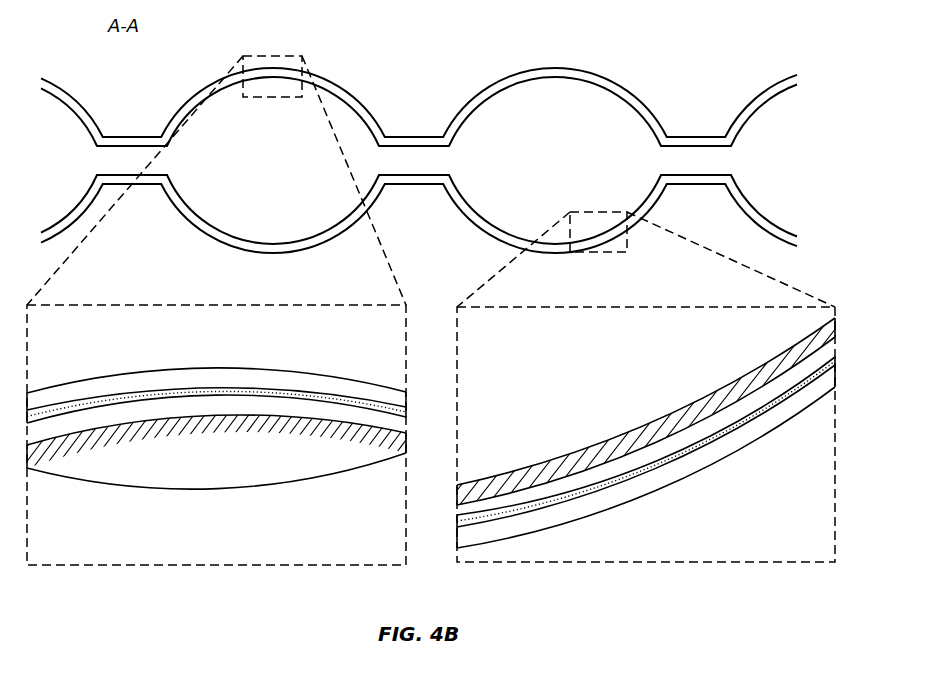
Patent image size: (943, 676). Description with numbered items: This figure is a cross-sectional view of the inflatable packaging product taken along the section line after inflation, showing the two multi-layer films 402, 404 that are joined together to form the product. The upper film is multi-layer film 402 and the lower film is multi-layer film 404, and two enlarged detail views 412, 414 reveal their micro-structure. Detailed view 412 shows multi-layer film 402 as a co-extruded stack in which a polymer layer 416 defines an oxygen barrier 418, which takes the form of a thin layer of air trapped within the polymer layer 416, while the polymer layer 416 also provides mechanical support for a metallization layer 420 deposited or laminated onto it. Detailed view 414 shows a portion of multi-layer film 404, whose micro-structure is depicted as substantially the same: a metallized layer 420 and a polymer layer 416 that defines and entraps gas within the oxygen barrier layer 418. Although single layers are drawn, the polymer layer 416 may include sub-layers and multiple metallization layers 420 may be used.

The multi-layer film 402 is at (467, 102).
The multi-layer film 404 is at (467, 220).
The detailed view 412 is at (59, 330).
The detailed view 414 is at (489, 330).
The polymer layer 416 is at (227, 386).
The oxygen barrier 418 is at (292, 388).
The metallization layer 420 is at (220, 432).